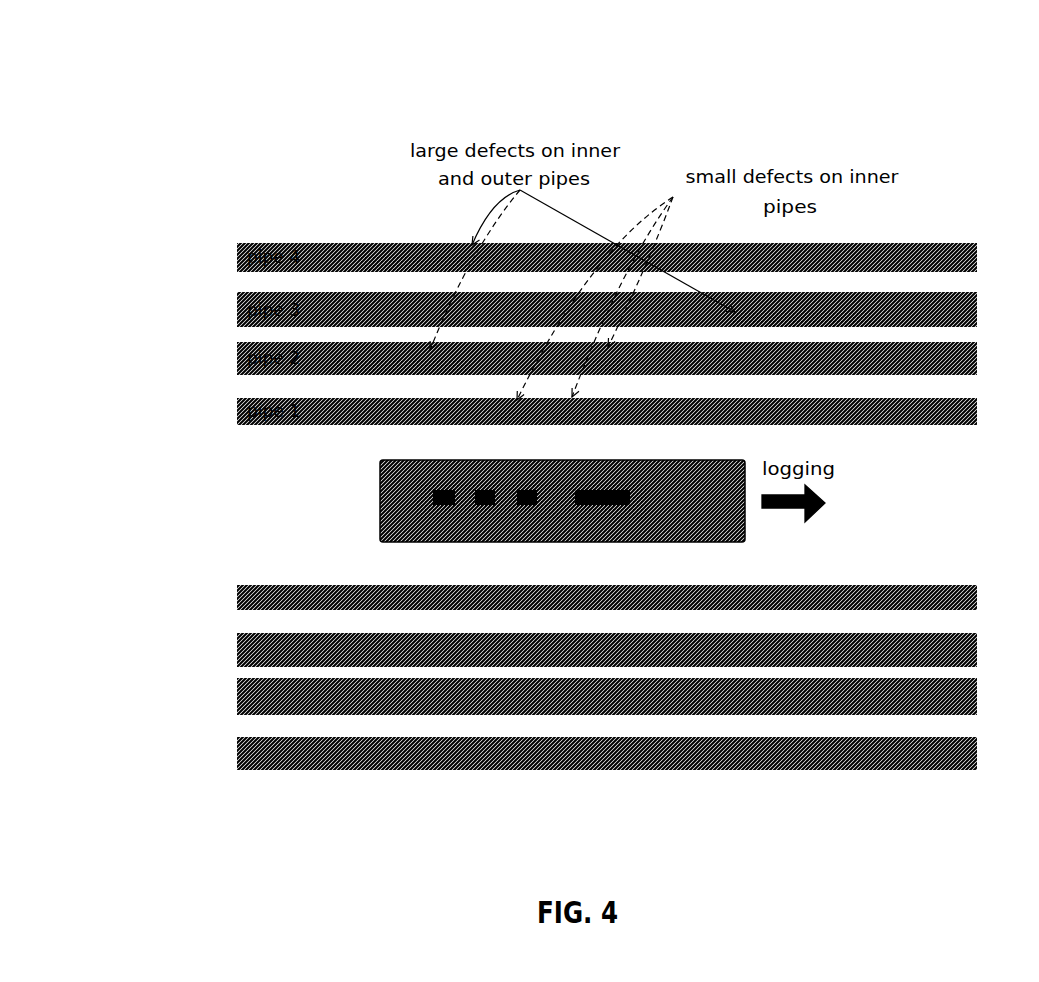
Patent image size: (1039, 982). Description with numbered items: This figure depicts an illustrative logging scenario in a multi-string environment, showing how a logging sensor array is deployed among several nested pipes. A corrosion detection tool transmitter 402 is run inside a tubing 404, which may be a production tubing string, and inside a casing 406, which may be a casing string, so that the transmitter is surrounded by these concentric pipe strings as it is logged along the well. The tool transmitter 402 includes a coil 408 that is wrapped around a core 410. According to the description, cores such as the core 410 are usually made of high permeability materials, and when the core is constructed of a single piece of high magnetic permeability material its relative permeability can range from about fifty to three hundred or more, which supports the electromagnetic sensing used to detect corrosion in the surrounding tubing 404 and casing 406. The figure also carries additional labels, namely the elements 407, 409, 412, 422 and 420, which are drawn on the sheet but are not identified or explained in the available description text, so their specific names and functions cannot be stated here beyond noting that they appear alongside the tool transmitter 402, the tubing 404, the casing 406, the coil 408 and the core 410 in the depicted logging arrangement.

The corrosion detection tool transmitter 402 is at (459, 431).
The tubing 404 is at (557, 525).
The casing 406 is at (605, 478).
The first receiver 407 is at (523, 478).
The coil 408 is at (483, 478).
The third receiver 409 is at (440, 482).
The first pipe 412 is at (237, 592).
The core 410 is at (237, 648).
The third pipe 422 is at (237, 698).
The fourth pipe 420 is at (238, 757).